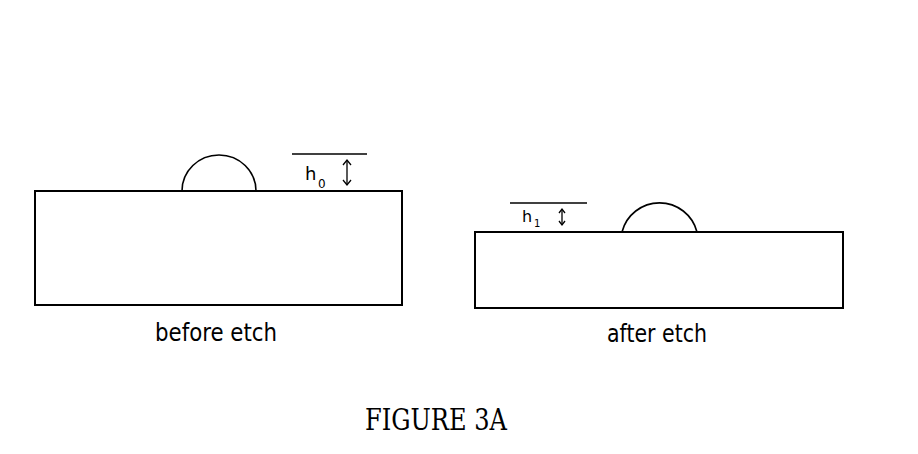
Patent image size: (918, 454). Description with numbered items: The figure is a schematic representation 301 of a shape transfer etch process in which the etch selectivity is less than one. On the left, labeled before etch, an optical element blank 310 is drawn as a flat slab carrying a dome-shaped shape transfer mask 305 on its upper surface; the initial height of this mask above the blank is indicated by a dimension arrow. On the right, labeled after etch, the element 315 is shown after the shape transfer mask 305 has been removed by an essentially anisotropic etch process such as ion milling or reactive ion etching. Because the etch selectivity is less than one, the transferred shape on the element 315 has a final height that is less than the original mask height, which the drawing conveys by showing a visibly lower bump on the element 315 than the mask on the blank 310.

The schematic representation 301 is at (460, 33).
The shape transfer mask 305 is at (220, 162).
The optical element blank 310 is at (238, 285).
The element 315 is at (678, 287).